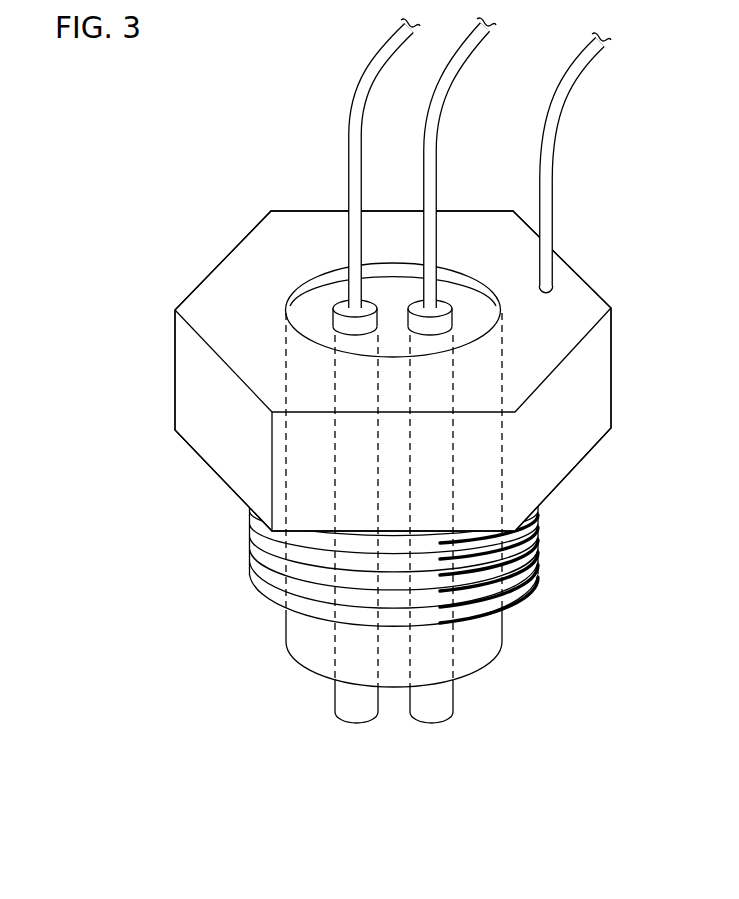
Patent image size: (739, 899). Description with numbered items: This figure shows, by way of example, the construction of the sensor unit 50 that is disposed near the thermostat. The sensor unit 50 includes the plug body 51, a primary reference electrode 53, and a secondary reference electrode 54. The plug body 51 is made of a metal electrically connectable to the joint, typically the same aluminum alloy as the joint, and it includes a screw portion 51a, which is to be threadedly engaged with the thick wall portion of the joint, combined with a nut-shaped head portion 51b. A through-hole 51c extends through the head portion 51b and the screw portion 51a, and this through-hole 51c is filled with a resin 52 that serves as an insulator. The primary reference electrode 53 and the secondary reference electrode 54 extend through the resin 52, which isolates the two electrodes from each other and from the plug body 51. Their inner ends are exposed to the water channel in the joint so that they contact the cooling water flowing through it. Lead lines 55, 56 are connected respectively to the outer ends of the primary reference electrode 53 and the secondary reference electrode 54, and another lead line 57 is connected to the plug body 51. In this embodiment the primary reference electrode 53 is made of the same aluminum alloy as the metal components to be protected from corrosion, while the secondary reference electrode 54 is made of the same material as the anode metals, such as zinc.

The sensor unit 50 is at (386, 400).
The plug body 51 is at (386, 371).
The screw portion 51a is at (262, 555).
The head portion 51b is at (188, 384).
The through-hole 51c is at (301, 291).
The resin 52 is at (308, 657).
The primary reference electrode 53 is at (363, 715).
The secondary reference electrode 54 is at (438, 715).
The lead line 55 is at (353, 155).
The lead line 56 is at (432, 166).
The lead line 57 is at (550, 181).